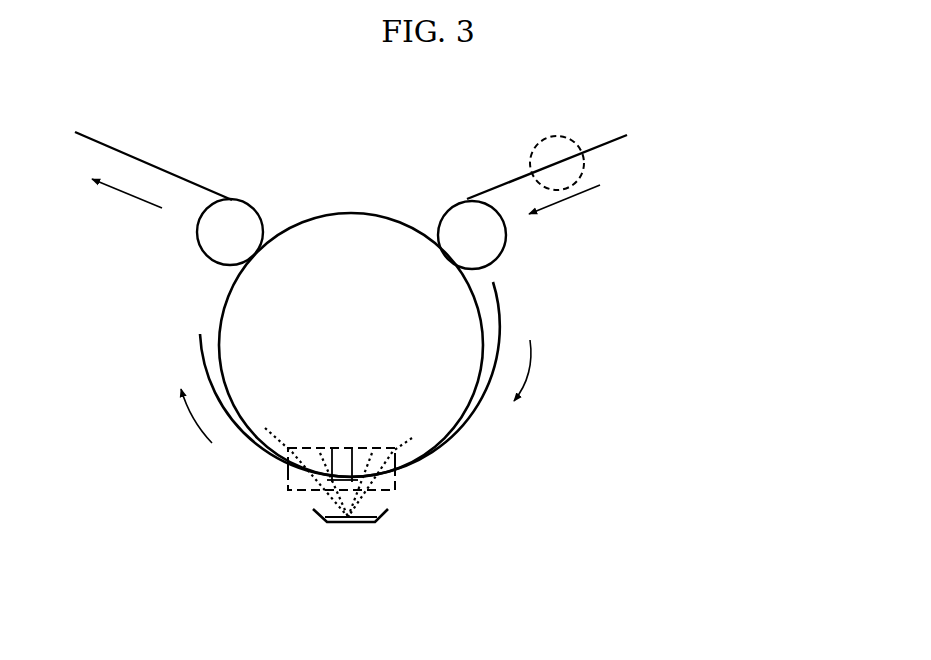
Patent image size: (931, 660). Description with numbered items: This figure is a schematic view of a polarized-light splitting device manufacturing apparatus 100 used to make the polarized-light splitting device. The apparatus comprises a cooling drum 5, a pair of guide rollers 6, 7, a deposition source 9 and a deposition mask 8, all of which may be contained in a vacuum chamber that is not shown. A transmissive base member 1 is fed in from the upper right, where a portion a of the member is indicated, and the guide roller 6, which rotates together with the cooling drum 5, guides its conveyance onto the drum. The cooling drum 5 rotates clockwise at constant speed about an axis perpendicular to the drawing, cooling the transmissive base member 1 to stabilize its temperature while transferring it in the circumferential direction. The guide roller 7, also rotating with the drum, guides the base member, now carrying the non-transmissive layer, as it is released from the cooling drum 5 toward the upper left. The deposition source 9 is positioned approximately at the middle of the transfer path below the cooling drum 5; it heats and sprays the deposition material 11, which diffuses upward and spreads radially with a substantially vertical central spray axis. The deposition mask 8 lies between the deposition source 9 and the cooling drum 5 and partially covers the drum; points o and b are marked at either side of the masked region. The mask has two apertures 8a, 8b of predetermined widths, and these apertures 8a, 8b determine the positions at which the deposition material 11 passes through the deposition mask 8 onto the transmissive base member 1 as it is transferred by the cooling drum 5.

The polarized-light splitting device manufacturing apparatus 100 is at (675, 366).
The transmissive base member 1 is at (486, 187).
The recording medium a is at (565, 138).
The cooling drum 5 is at (222, 302).
The guide roller 6 is at (485, 243).
The guide roller 7 is at (212, 235).
The deposition mask 8 is at (500, 318).
The aperture 8a is at (380, 448).
The aperture 8b is at (300, 448).
The deposition source 9 is at (386, 512).
The deposition material 11 is at (311, 498).
The entry point o is at (288, 472).
The exit point b is at (392, 473).